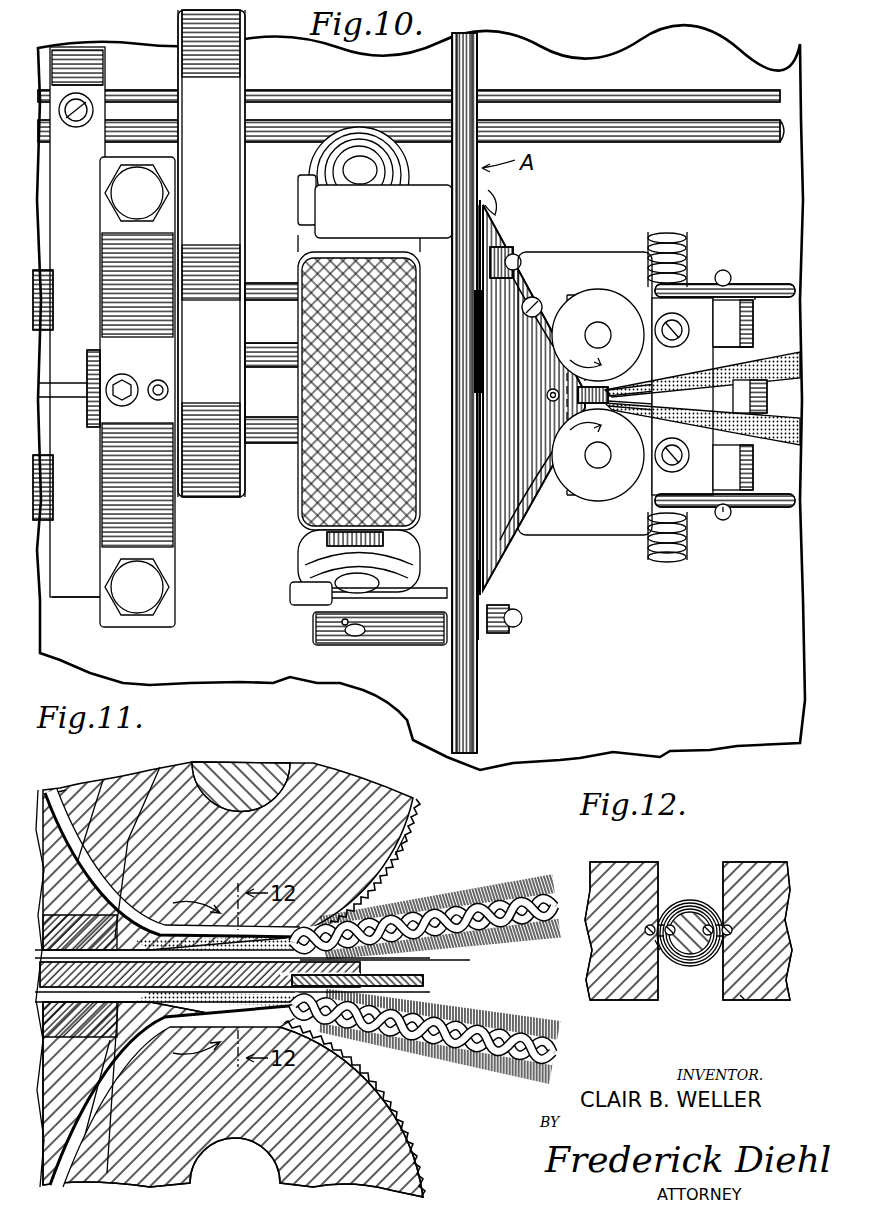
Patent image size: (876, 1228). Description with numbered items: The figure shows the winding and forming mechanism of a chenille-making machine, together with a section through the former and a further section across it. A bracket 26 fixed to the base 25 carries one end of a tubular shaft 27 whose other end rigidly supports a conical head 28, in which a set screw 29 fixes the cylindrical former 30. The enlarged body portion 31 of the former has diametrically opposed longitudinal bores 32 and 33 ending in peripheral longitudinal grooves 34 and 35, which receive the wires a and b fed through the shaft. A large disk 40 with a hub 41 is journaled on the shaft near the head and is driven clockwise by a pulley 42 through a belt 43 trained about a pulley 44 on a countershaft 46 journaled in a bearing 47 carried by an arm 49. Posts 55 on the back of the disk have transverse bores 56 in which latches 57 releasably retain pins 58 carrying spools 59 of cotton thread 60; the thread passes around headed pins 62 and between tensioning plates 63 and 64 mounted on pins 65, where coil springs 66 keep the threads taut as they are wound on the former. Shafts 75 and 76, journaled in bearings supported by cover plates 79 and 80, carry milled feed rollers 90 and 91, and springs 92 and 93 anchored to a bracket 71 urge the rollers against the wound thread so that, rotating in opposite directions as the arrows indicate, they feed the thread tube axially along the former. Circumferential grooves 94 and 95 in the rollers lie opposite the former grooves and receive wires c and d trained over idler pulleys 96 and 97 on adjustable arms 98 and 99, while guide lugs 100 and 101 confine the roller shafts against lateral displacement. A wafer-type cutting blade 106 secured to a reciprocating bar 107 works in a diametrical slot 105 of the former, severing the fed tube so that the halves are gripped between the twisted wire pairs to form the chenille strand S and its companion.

In FIG. 10, the base 25 is at (718, 742).
In FIG. 10, the bracket 26 is at (165, 627).
In FIG. 10, the tubular shaft 27 is at (93, 430).
In FIG. 10, the conical head 28 is at (490, 580).
In FIG. 11, the conical head 28 is at (45, 805).
In FIG. 10, the set screw 29 is at (546, 394).
In FIG. 10, the former 30 is at (600, 388).
In FIG. 11, the former 30 is at (350, 940).
In FIG. 12, the former 30 is at (690, 945).
In FIG. 11, the enlarged body portion 31 is at (100, 790).
In FIG. 11, the longitudinal bore 32 is at (108, 1175).
In FIG. 11, the longitudinal bore 33 is at (160, 775).
In FIG. 11, the longitudinal groove 34 is at (375, 1062).
In FIG. 12, the longitudinal groove 34 is at (672, 920).
In FIG. 11, the longitudinal groove 35 is at (430, 961).
In FIG. 12, the longitudinal groove 35 is at (708, 920).
In FIG. 10, the disk 40 is at (478, 62).
In FIG. 10, the hub 41 is at (275, 443).
In FIG. 10, the pulley 42 is at (243, 497).
In FIG. 10, the belt 43 is at (207, 497).
In FIG. 10, the pulley 44 is at (182, 30).
In FIG. 10, the countershaft 46 is at (720, 102).
In FIG. 10, the bearing 47 is at (58, 60).
In FIG. 10, the arm 49 is at (100, 95).
In FIG. 10, the posts 55 is at (435, 185).
In FIG. 10, the transverse bores 56 is at (345, 640).
In FIG. 10, the latches 57 is at (300, 192).
In FIG. 10, the pins 58 is at (355, 640).
In FIG. 10, the spools 59 is at (305, 135).
In FIG. 10, the thread 60 is at (517, 292).
In FIG. 10, the headed pins 62 is at (497, 212).
In FIG. 10, the tensioning plate 63 is at (482, 640).
In FIG. 10, the tensioning plate 64 is at (480, 650).
In FIG. 10, the pins 65 is at (505, 255).
In FIG. 10, the coil springs 66 is at (512, 628).
In FIG. 10, the bracket 71 is at (700, 495).
In FIG. 10, the shaft 75 is at (600, 500).
In FIG. 10, the shaft 76 is at (600, 290).
In FIG. 11, the shaft 76 is at (255, 772).
In FIG. 10, the plate 79 is at (598, 535).
In FIG. 10, the plate 80 is at (590, 252).
In FIG. 10, the feed roller 90 is at (612, 468).
In FIG. 11, the feed roller 90 is at (395, 1175).
In FIG. 12, the feed roller 90 is at (597, 872).
In FIG. 10, the feed roller 91 is at (585, 322).
In FIG. 11, the feed roller 91 is at (330, 805).
In FIG. 12, the feed roller 91 is at (778, 880).
In FIG. 10, the spring 92 is at (672, 562).
In FIG. 10, the spring 93 is at (675, 240).
In FIG. 11, the circumferential groove 94 is at (415, 1150).
In FIG. 12, the circumferential groove 94 is at (650, 922).
In FIG. 11, the circumferential groove 95 is at (410, 835).
In FIG. 12, the circumferential groove 95 is at (730, 922).
In FIG. 10, the idler pulley 96 is at (775, 510).
In FIG. 10, the idler pulley 97 is at (763, 284).
In FIG. 10, the adjustable arm 98 is at (752, 470).
In FIG. 10, the adjustable arm 99 is at (752, 320).
In FIG. 10, the guide lug 100 is at (740, 340).
In FIG. 10, the guide lug 101 is at (567, 540).
In FIG. 11, the diametrical slot 105 is at (405, 838).
In FIG. 10, the cutting blade 106 is at (658, 401).
In FIG. 11, the cutting blade 106 is at (425, 983).
In FIG. 10, the bar 107 is at (648, 375).
In FIG. 10, the wire a is at (60, 398).
In FIG. 11, the wire a is at (40, 1015).
In FIG. 12, the wire a is at (660, 940).
In FIG. 10, the wire b is at (60, 380).
In FIG. 11, the wire b is at (40, 935).
In FIG. 12, the wire b is at (710, 940).
In FIG. 10, the wire c is at (742, 515).
In FIG. 11, the wire c is at (55, 1175).
In FIG. 12, the wire c is at (598, 1002).
In FIG. 10, the wire d is at (750, 284).
In FIG. 11, the wire d is at (62, 792).
In FIG. 12, the wire d is at (745, 1000).
In FIG. 10, the chenille strand S is at (768, 385).
In FIG. 11, the chenille strand S is at (513, 900).